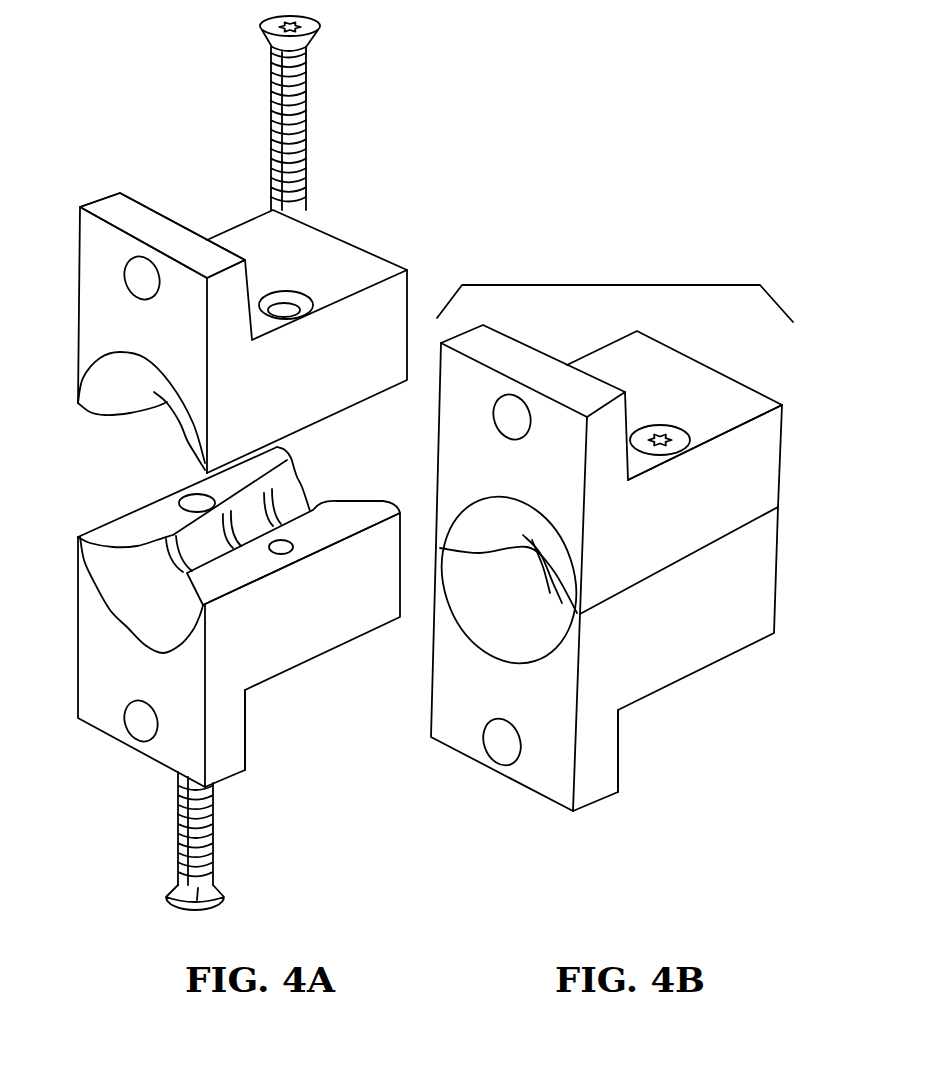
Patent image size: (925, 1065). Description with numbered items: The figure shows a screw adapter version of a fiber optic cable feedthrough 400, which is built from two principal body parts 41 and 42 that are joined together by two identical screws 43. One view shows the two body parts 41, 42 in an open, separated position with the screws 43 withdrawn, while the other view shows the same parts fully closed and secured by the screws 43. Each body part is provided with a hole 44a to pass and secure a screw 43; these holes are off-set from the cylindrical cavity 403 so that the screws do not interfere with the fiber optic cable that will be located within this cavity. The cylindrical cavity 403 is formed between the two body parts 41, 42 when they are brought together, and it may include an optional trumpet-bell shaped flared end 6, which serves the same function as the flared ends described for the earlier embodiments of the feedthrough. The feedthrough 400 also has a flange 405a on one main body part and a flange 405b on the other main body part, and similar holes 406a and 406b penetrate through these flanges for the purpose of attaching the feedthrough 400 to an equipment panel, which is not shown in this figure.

In FIG. 4B, the fiber optic cable feedthrough 400 is at (615, 275).
In FIG. 4A, the principal body part 41 is at (293, 672).
In FIG. 4B, the principal body part 41 is at (678, 682).
In FIG. 4A, the principal body part 42 is at (333, 412).
In FIG. 4B, the principal body part 42 is at (603, 353).
In FIG. 4A, the screw 43 is at (307, 103).
In FIG. 4A, the hole 44a is at (287, 307).
In FIG. 4B, the cylindrical cavity 403 is at (547, 550).
In FIG. 4A, the flange 405a is at (248, 745).
In FIG. 4B, the flange 405a is at (620, 767).
In FIG. 4A, the flange 405b is at (140, 212).
In FIG. 4B, the flange 405b is at (630, 408).
In FIG. 4A, the hole 406a is at (142, 728).
In FIG. 4B, the hole 406a is at (497, 745).
In FIG. 4A, the hole 406b is at (140, 257).
In FIG. 4B, the hole 406b is at (495, 417).
In FIG. 4B, the trumpet-bell shaped flared end 6 is at (503, 633).